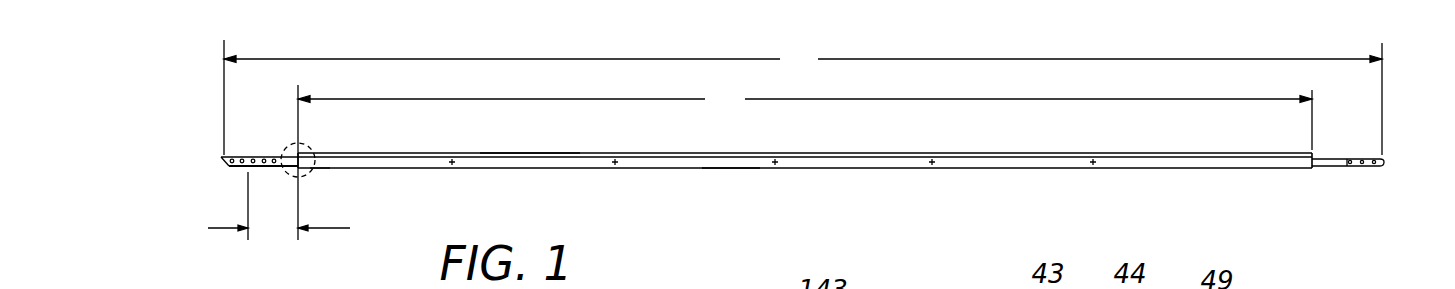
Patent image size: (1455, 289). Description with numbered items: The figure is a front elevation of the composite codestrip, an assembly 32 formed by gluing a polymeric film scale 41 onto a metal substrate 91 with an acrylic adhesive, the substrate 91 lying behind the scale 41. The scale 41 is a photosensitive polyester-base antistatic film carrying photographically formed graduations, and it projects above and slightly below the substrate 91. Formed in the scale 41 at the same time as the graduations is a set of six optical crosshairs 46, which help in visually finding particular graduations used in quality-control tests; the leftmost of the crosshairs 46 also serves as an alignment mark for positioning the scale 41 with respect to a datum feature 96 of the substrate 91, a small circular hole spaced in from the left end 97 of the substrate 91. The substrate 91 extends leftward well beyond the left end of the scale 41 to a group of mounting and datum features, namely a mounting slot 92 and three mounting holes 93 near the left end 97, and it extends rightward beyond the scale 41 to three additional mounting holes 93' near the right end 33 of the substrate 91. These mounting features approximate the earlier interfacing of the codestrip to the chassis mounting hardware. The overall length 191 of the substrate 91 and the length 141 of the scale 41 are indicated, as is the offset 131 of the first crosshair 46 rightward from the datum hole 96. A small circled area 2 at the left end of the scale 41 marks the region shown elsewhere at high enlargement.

The enlarged area 2 is at (317, 152).
The assembly 32 is at (1200, 180).
The right end of the substrate 33 is at (1384, 162).
The polymeric film scale 41 is at (565, 173).
The optical crosshairs 46 is at (310, 168).
The metal substrate 91 is at (272, 168).
The mounting slot 92 is at (233, 157).
The mounting holes 93 is at (258, 117).
The additional mounting holes 93' is at (1385, 201).
The datum feature 96 is at (243, 168).
The left end of the substrate 97 is at (223, 157).
The offset of first crosshair from datum hole 131 is at (256, 207).
The length of the scale 141 is at (805, 162).
The length of the substrate 191 is at (803, 97).